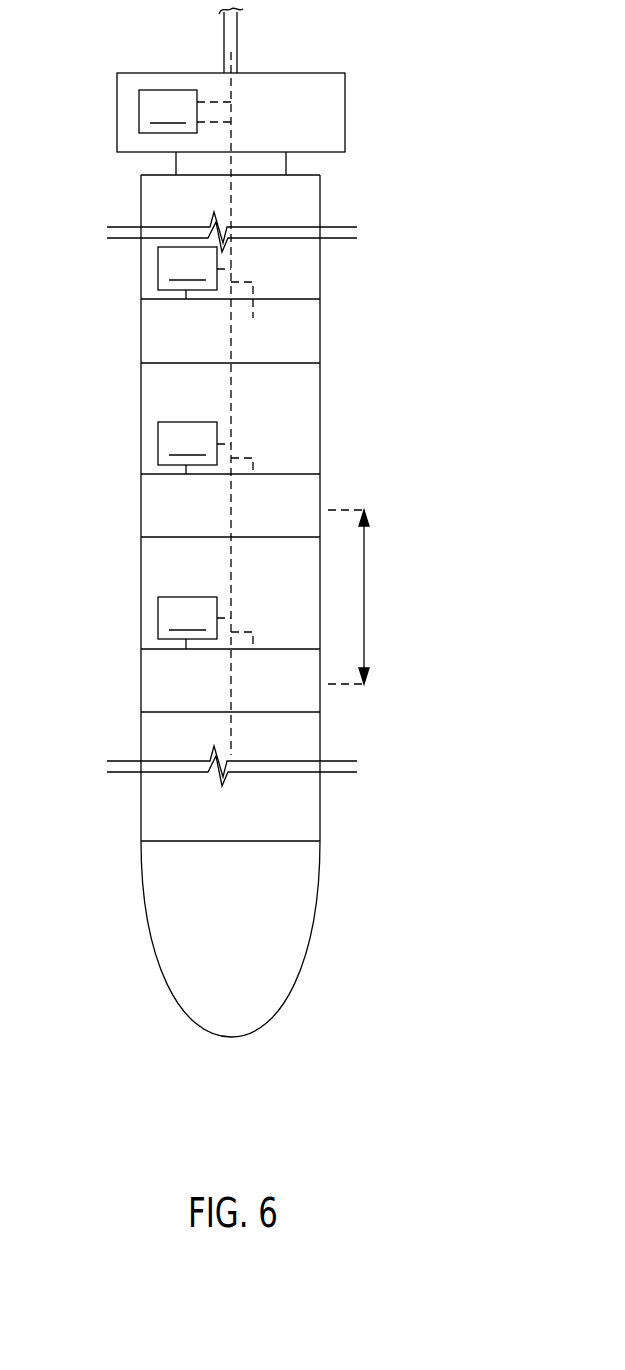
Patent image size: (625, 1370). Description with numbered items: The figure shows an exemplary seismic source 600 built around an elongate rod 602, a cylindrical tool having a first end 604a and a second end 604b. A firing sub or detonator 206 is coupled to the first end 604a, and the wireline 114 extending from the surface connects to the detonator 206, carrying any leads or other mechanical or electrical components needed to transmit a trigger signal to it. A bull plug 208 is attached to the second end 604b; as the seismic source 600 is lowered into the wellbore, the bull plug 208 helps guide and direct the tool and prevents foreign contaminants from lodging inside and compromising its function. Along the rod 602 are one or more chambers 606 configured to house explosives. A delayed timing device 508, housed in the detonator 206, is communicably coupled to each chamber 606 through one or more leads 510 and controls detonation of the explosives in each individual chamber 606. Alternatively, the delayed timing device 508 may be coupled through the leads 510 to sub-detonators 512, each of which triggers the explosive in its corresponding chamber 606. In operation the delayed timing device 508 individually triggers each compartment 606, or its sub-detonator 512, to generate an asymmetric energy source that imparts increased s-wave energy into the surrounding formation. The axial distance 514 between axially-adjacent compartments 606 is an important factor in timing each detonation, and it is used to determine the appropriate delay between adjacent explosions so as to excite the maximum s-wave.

The wireline 114 is at (237, 40).
The detonator 206 is at (122, 121).
The bull plug 208 is at (293, 947).
The delayed timing device 508 is at (168, 111).
The leads 510 is at (231, 142).
The sub-detonator 512 is at (187, 448).
The axial distance 514 is at (364, 613).
The seismic source 600 is at (400, 132).
The elongate rod 602 is at (310, 432).
The first end 604a is at (153, 203).
The second end 604b is at (153, 808).
The chambers 606 is at (153, 342).